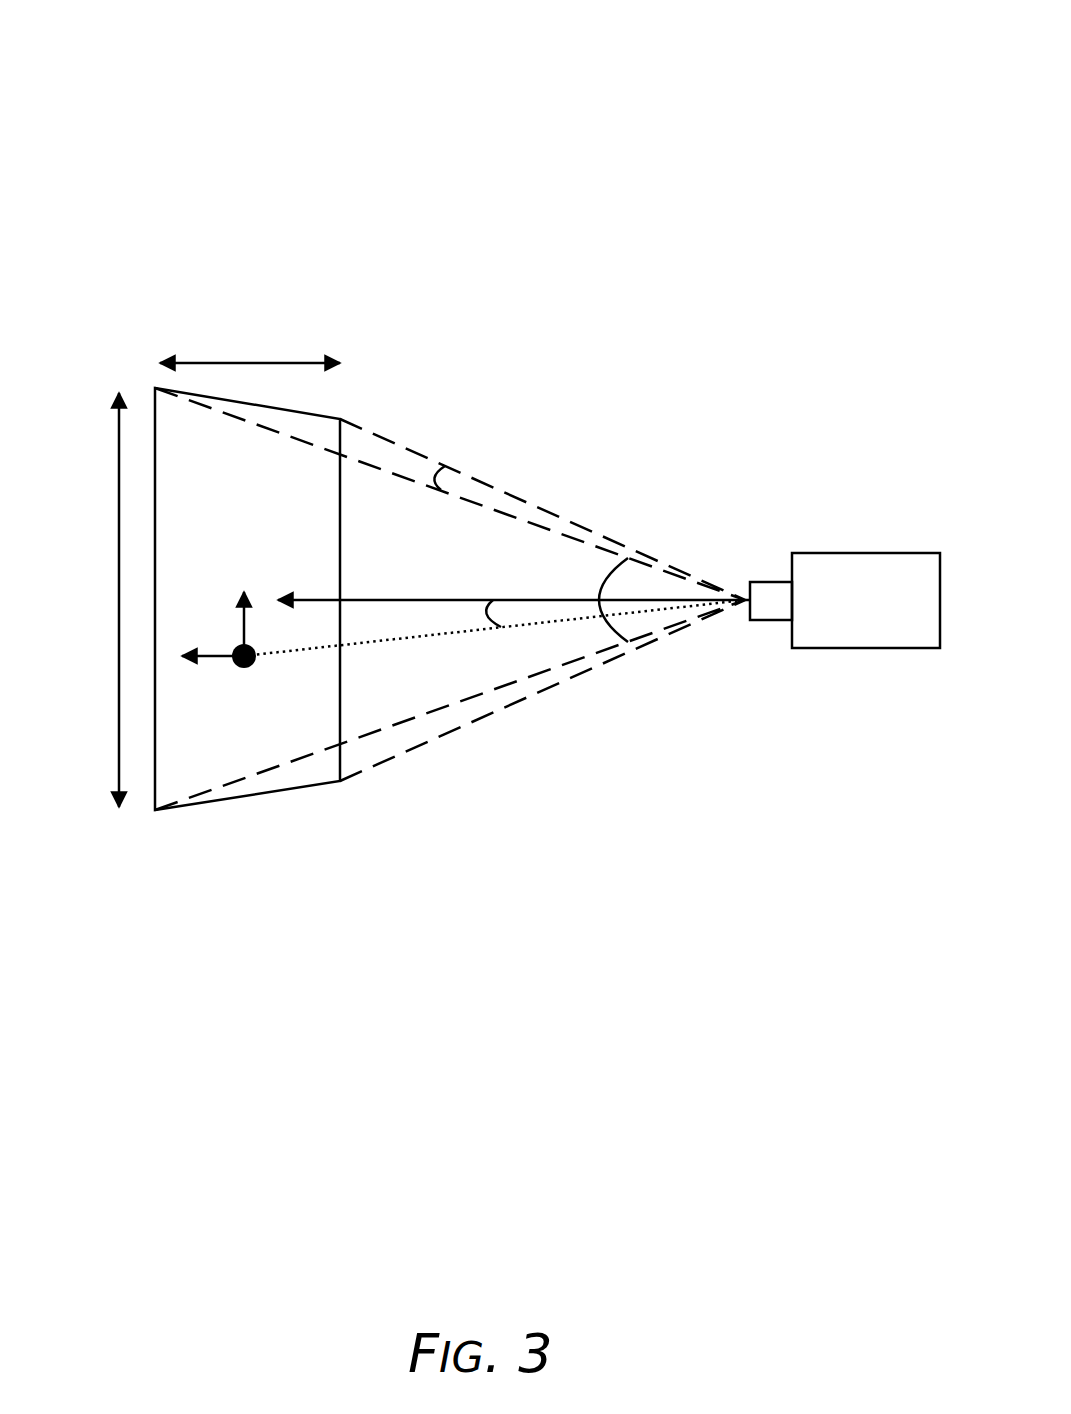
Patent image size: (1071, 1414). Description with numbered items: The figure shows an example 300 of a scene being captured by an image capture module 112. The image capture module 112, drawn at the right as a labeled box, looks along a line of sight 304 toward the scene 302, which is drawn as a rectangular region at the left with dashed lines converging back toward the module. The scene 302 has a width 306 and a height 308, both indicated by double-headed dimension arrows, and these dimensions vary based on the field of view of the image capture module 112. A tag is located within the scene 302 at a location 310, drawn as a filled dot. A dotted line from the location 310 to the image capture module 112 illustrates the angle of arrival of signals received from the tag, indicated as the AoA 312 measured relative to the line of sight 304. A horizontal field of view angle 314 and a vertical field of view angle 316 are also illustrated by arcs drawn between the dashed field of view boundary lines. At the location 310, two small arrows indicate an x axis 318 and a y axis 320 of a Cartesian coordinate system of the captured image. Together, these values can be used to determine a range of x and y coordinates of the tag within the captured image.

The example 300 is at (827, 60).
The scene 302 is at (318, 413).
The line of sight 304 is at (375, 600).
The width 306 is at (238, 363).
The height 308 is at (118, 482).
The location 310 is at (242, 670).
The AoA 312 is at (492, 613).
The horizontal field of view angle 314 is at (433, 477).
The vertical field of view angle 316 is at (606, 650).
The x axis 318 is at (203, 658).
The y axis 320 is at (242, 622).
The image capture module 112 is at (893, 641).